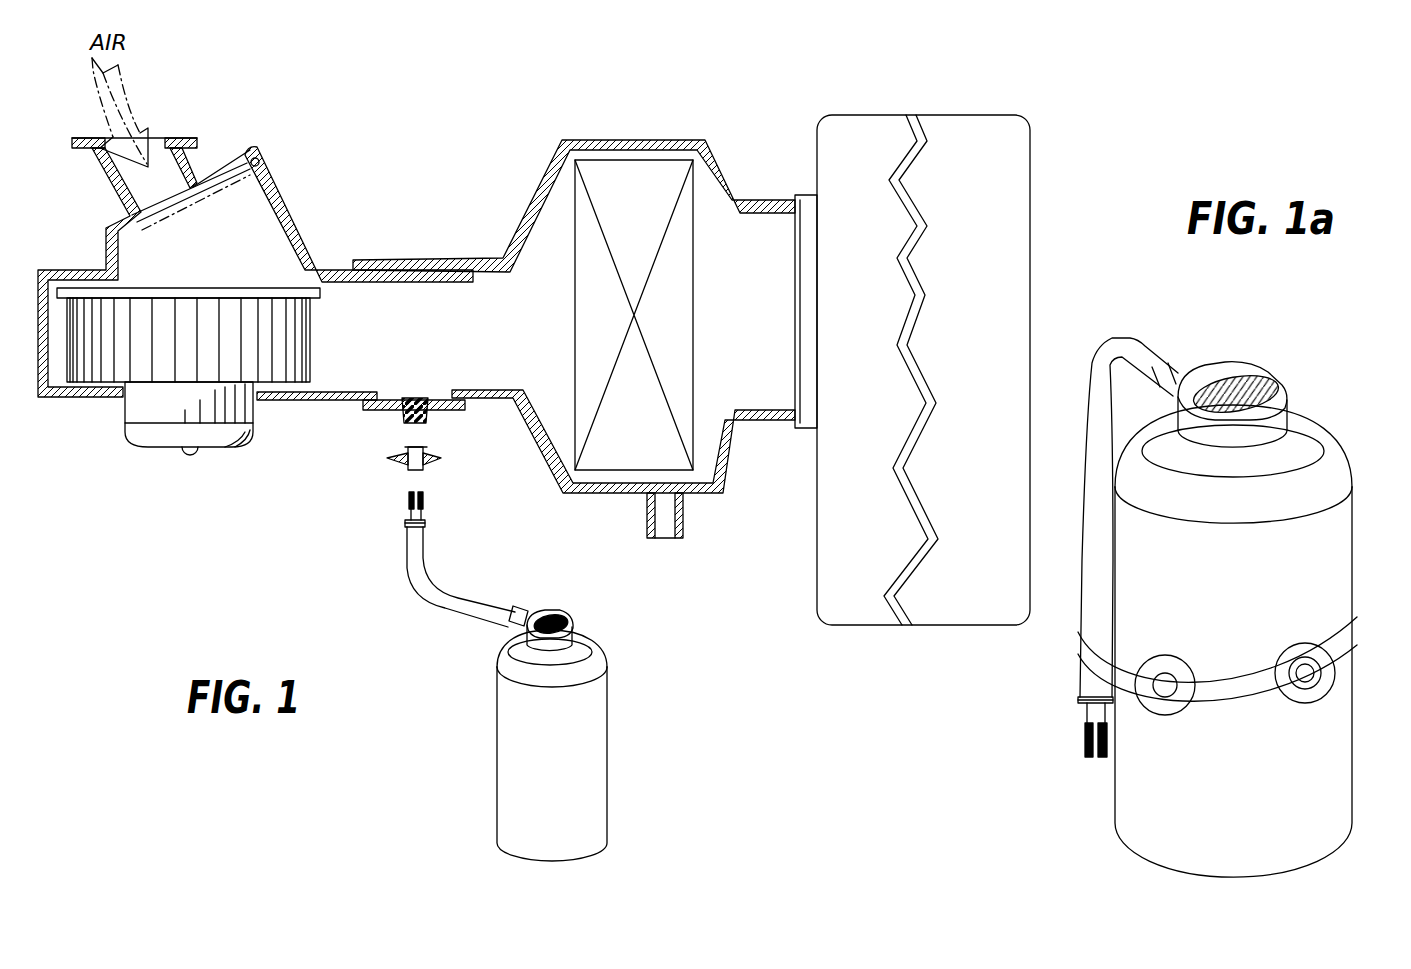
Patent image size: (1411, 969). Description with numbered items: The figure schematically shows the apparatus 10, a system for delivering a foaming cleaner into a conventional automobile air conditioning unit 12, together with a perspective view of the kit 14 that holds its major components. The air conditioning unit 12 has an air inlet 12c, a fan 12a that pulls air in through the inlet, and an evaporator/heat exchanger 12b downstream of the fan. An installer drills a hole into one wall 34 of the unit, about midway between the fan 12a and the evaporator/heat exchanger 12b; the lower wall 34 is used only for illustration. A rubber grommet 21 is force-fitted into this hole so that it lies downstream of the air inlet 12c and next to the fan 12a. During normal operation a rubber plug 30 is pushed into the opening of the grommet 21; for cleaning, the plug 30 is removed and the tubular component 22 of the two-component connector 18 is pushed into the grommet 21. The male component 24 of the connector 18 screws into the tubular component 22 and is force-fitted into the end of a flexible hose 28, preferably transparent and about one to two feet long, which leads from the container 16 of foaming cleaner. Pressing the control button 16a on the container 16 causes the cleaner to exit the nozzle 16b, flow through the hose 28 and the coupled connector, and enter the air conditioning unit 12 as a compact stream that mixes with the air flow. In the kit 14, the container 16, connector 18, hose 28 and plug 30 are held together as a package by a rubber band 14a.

In FIG. 1, the apparatus 10 is at (403, 215).
In FIG. 1, the air conditioning unit 12 is at (528, 190).
In FIG. 1, the fan 12a is at (122, 370).
In FIG. 1, the evaporator/heat exchanger 12b is at (650, 172).
In FIG. 1, the air inlet 12c is at (163, 150).
In FIG. 1A, the kit 14 is at (1043, 747).
In FIG. 1A, the rubber band 14a is at (1235, 700).
In FIG. 1, the container 16 is at (598, 694).
In FIG. 1A, the container 16 is at (1132, 828).
In FIG. 1, the control button 16a is at (557, 615).
In FIG. 1A, the control button 16a is at (1215, 385).
In FIG. 1, the nozzle 16b is at (500, 636).
In FIG. 1, the two-component connector 18 is at (396, 508).
In FIG. 1A, the two-component connector 18 is at (1060, 812).
In FIG. 1, the rubber grommet 21 is at (440, 462).
In FIG. 1A, the rubber grommet 21 is at (1316, 650).
In FIG. 1, the tubular component 22 is at (425, 505).
In FIG. 1A, the tubular component 22 is at (1086, 745).
In FIG. 1, the male component 24 is at (405, 528).
In FIG. 1A, the male component 24 is at (1077, 703).
In FIG. 1, the flexible hose 28 is at (428, 563).
In FIG. 1A, the flexible hose 28 is at (1112, 342).
In FIG. 1, the plug 30 is at (435, 418).
In FIG. 1A, the plug 30 is at (1180, 665).
In FIG. 1, the wall 34 is at (430, 398).